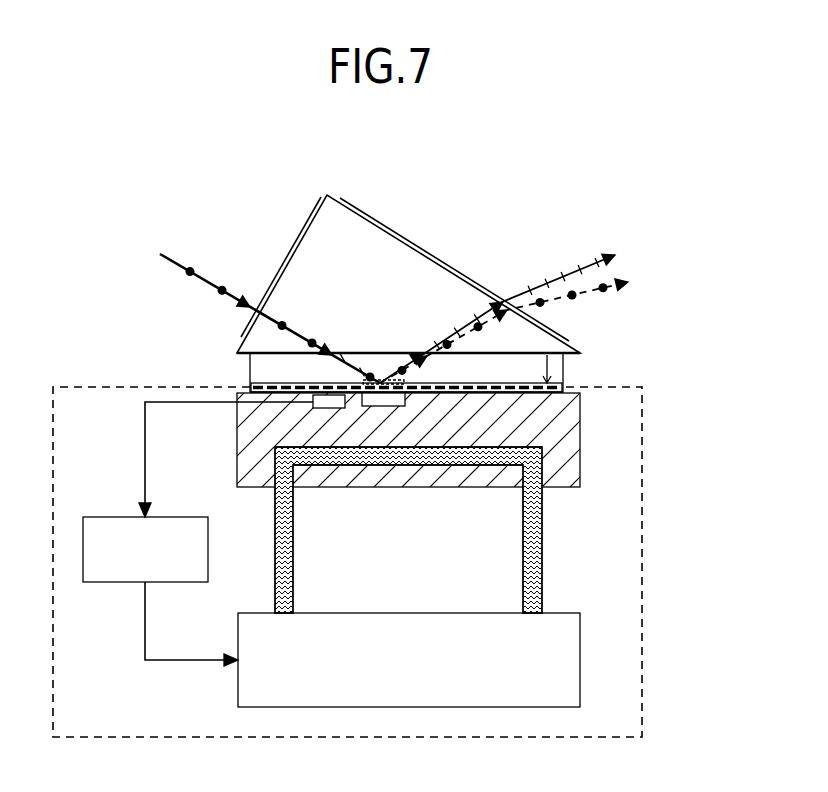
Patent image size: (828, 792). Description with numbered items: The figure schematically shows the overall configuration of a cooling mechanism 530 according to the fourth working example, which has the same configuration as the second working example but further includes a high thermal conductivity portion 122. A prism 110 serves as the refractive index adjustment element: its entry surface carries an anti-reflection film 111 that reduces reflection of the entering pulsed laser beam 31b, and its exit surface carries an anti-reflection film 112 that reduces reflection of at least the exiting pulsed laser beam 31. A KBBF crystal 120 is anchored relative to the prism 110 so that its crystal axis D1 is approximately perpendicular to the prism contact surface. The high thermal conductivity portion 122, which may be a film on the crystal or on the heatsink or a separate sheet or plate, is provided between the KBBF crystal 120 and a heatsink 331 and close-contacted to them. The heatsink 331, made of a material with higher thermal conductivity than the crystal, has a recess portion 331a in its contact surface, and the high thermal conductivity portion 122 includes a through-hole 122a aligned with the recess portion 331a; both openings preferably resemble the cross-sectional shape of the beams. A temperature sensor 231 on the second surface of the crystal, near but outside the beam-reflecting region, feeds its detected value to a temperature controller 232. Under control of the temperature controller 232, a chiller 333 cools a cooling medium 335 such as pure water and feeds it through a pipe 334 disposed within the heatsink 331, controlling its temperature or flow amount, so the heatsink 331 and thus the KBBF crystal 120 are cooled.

The prism 110 is at (368, 252).
The anti-reflection film 111 is at (286, 256).
The anti-reflection film 112 is at (441, 259).
The KBBF crystal 120 is at (250, 367).
The high thermal conductivity portion 122 is at (258, 382).
The through-hole 122a is at (366, 393).
The pulsed laser beam 31 is at (614, 258).
The pulsed laser beam 31b is at (181, 264).
The crystal axis D1 is at (547, 358).
The temperature sensor 231 is at (323, 412).
The temperature controller 232 is at (107, 584).
The heatsink 331 is at (580, 437).
The recess portion 331a is at (392, 400).
The chiller 333 is at (238, 687).
The pipe 334 is at (294, 569).
The cooling medium 335 is at (514, 564).
The cooling mechanism 530 is at (643, 558).